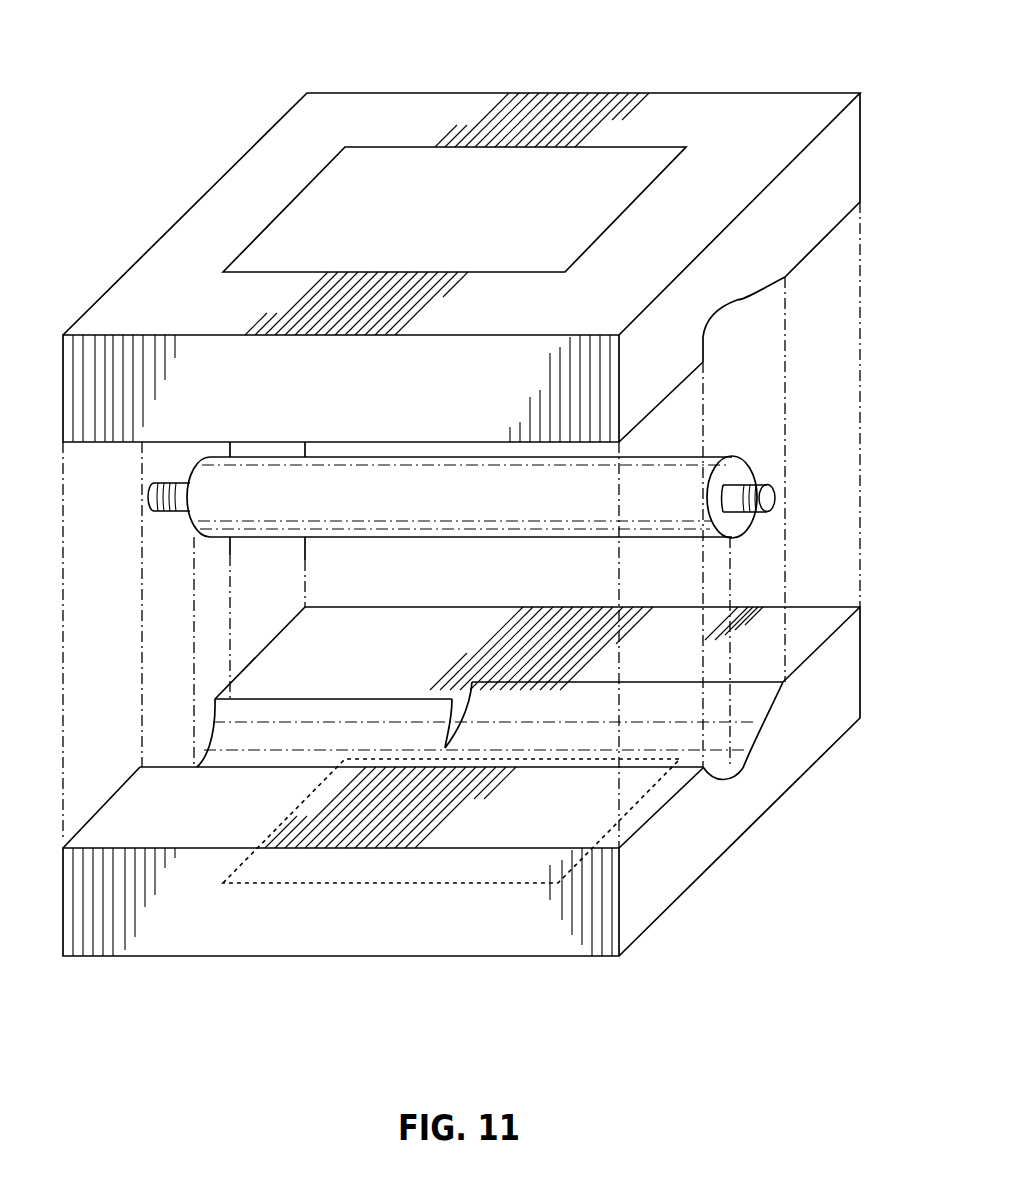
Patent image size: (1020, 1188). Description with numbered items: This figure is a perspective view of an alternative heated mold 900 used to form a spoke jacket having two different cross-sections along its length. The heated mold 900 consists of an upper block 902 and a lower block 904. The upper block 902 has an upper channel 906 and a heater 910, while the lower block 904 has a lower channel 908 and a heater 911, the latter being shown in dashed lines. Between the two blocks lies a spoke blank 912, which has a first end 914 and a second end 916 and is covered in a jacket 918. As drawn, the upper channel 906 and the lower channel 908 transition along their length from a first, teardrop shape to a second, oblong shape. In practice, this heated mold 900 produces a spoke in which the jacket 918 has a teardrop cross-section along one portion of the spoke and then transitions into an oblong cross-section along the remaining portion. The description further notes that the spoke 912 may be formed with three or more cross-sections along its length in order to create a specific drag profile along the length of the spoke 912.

The heated mold 900 is at (461, 529).
The upper block 902 is at (461, 241).
The lower block 904 is at (461, 818).
The upper channel 906 is at (785, 290).
The lower channel 908 is at (743, 768).
The heater 910 is at (622, 170).
The heater 911 is at (398, 885).
The spoke blank 912 is at (712, 540).
The first end 914 is at (464, 504).
The second end 916 is at (213, 538).
The jacket 918 is at (470, 538).